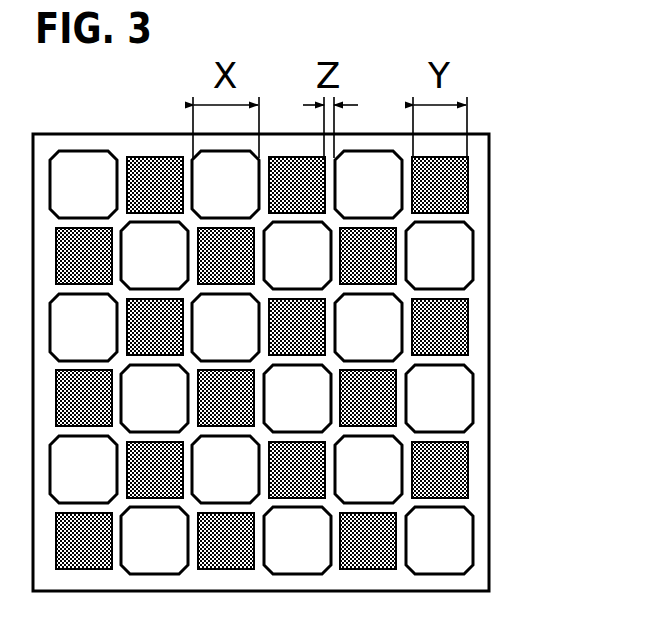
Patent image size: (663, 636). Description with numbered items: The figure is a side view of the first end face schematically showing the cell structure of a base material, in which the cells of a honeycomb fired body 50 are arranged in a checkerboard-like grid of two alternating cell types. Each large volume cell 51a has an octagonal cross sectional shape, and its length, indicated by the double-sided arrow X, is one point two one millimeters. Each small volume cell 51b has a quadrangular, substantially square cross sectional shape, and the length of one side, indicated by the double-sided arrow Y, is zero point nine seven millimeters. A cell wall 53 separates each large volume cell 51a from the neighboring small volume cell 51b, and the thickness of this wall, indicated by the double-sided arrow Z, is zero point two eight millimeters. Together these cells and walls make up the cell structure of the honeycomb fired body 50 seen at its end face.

The honeycomb fired body 50 is at (320, 328).
The large volume cell 51a is at (458, 405).
The small volume cell 51b is at (455, 320).
The cell wall 53 is at (453, 358).